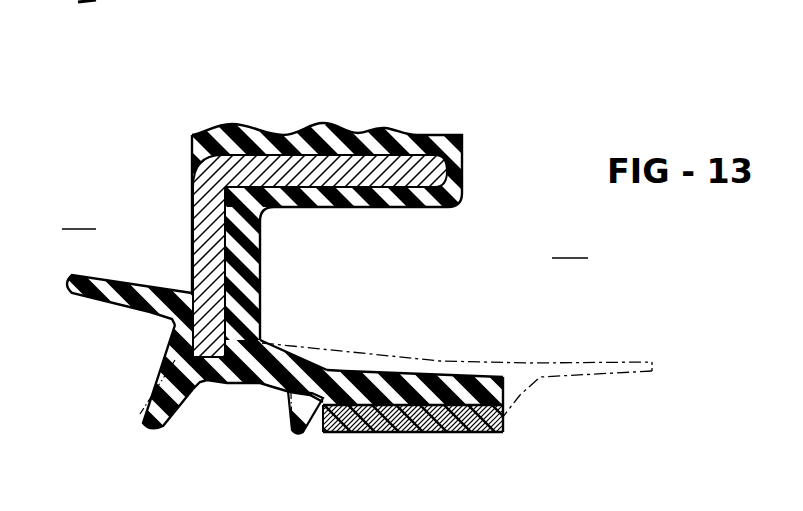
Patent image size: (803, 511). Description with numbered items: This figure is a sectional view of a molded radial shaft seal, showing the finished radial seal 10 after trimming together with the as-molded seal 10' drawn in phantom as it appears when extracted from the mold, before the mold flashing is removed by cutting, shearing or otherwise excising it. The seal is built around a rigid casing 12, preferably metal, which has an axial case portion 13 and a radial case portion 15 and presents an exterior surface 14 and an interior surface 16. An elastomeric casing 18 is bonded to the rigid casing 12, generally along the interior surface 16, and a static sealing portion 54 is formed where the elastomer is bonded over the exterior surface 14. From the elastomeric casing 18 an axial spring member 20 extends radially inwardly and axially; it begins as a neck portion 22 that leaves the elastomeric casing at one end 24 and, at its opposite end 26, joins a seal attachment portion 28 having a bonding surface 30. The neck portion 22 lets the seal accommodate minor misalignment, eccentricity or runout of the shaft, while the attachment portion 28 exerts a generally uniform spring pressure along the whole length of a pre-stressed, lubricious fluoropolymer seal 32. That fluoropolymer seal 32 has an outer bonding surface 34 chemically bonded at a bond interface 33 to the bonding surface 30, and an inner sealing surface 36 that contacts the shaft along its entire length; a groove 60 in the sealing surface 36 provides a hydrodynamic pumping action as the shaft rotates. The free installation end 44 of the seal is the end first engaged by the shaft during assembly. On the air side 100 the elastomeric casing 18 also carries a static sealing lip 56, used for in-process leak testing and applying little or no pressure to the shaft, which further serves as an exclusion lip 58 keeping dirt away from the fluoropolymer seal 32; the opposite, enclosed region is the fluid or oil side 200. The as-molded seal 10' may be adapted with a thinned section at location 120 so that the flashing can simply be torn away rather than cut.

The radial shaft seal 10 is at (263, 225).
The as-molded radial seal 10' is at (583, 325).
The rigid casing 12 is at (426, 134).
The axial case portion 13 is at (250, 167).
The exterior surface 14 is at (322, 128).
The radial case portion 15 is at (207, 196).
The interior surface 16 is at (362, 205).
The elastomeric casing 18 is at (248, 304).
The axial spring member 20 is at (290, 350).
The neck portion 22 is at (273, 356).
The one end 24 is at (274, 346).
The opposite end 26 is at (340, 370).
The seal attachment portion 28 is at (440, 383).
The bonding surface 30 is at (490, 378).
The fluoropolymer seal 32 is at (316, 428).
The bond interface 33 is at (507, 407).
The bonding surface of fluoropolymer seal 34 is at (392, 375).
The sealing surface 36 is at (423, 415).
The installation end 44 is at (505, 422).
The static sealing portion 54 is at (388, 127).
The elastomeric static sealing lip 56 is at (293, 413).
The exclusion lip 58 is at (150, 308).
The groove 60 is at (357, 415).
The air side 100 is at (79, 219).
The thinned section location 120 is at (559, 363).
The fluid side 200 is at (457, 299).